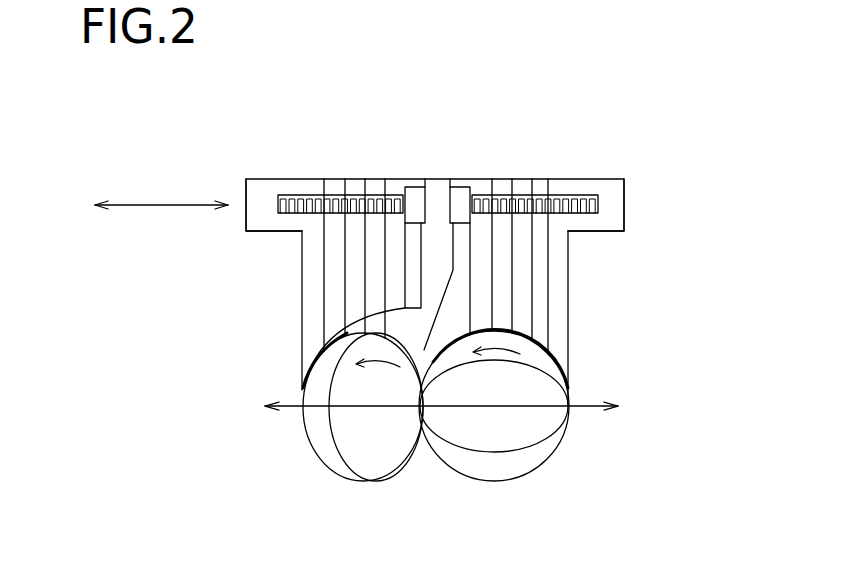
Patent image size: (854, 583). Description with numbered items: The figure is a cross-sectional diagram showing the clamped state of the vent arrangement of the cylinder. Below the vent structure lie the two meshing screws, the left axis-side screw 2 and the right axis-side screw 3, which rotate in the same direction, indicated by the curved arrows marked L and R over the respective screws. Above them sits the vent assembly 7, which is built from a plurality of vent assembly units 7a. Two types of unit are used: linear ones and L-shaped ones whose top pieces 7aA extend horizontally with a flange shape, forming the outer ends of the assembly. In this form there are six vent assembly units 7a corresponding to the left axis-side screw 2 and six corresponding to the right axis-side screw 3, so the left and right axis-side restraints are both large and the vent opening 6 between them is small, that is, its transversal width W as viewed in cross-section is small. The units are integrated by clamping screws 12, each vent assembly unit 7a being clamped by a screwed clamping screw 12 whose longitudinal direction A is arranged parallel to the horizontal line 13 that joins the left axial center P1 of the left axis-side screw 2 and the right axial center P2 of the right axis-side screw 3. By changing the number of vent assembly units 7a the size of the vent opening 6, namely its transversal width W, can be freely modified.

The left axis-side screw 2 is at (352, 438).
The right axis-side screw 3 is at (505, 442).
The vent opening 6 is at (435, 190).
The vent assembly 7 is at (291, 247).
The vent assembly unit 7a is at (313, 272).
The top piece 7aA is at (257, 192).
The clamping screw 12 is at (333, 197).
The horizontal line 13 is at (296, 408).
The transversal width W is at (446, 180).
The longitudinal direction A is at (161, 191).
The left axial center P1 is at (377, 404).
The right axial center P2 is at (495, 407).
The left rotation direction L is at (378, 378).
The right rotation direction R is at (496, 371).